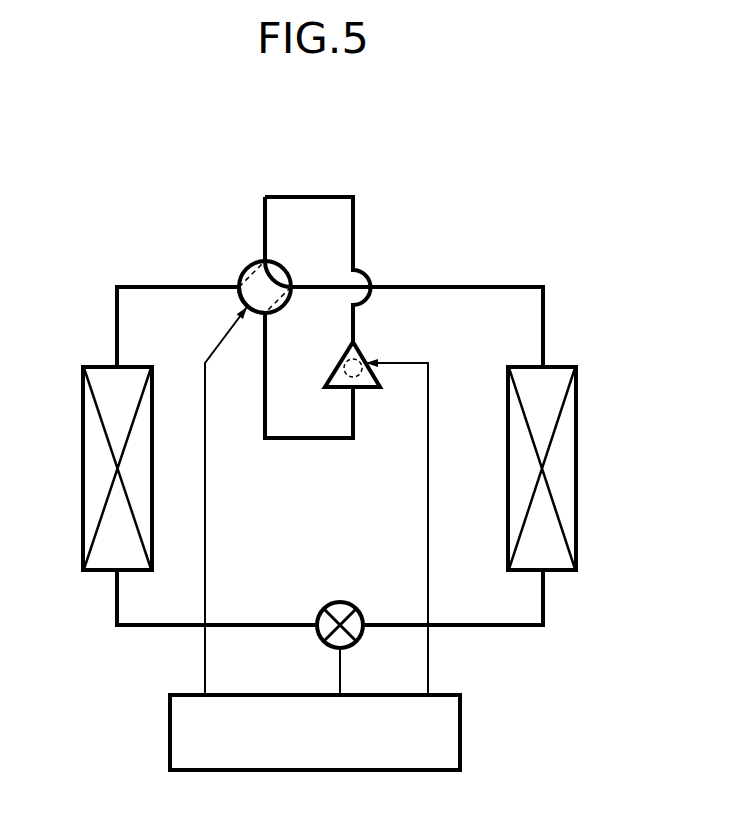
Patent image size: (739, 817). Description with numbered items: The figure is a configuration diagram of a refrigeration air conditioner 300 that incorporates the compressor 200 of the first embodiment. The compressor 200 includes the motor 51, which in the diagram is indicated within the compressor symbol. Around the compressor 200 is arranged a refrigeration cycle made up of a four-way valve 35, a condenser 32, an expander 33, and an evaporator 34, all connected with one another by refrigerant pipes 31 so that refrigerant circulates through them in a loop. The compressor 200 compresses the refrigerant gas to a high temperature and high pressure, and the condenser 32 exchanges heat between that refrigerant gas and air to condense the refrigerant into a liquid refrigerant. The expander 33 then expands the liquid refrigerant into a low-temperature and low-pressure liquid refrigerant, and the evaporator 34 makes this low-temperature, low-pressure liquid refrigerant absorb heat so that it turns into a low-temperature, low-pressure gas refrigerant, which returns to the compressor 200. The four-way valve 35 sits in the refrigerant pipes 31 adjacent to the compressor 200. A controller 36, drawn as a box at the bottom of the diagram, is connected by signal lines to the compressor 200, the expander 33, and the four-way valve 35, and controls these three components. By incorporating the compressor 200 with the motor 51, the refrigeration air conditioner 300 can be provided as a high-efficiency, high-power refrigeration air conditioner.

The refrigeration air conditioner 300 is at (505, 144).
The refrigerant pipes 31 is at (510, 285).
The condenser 32 is at (561, 366).
The expander 33 is at (339, 601).
The evaporator 34 is at (97, 366).
The four-way valve 35 is at (241, 268).
The controller 36 is at (262, 695).
The compressor 200 is at (363, 350).
The motor 51 is at (368, 392).